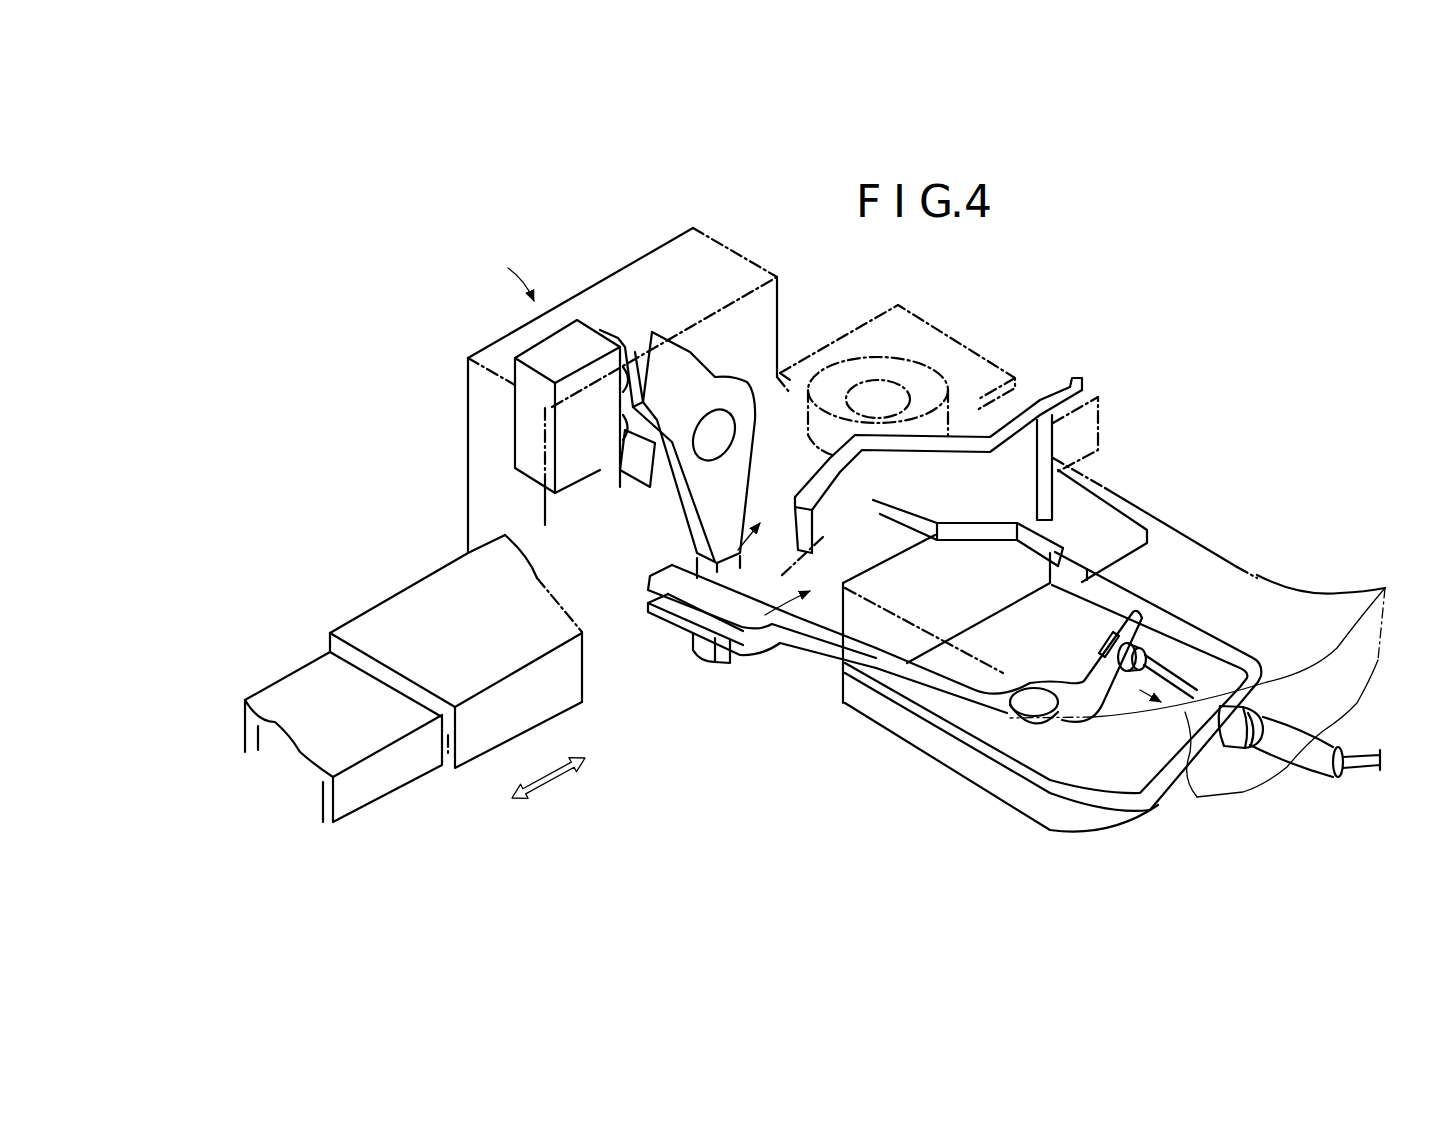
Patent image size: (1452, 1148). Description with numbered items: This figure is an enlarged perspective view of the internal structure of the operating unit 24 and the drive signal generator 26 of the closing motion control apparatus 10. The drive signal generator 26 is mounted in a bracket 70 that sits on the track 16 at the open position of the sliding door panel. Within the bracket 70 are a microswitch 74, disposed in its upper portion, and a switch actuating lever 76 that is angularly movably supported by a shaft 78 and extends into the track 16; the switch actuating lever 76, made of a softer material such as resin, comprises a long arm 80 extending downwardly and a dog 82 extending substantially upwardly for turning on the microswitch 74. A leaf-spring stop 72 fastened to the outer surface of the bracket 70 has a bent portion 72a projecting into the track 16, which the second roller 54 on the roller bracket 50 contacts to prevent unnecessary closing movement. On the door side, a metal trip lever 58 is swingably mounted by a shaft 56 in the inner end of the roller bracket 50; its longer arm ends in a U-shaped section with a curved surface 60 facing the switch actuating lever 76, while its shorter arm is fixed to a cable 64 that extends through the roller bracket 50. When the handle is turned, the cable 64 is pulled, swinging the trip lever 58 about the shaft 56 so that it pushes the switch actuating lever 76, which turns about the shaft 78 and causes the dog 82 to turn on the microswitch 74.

The closing motion control apparatus 10 is at (1268, 287).
The track 16 is at (421, 782).
The operating unit 24 is at (866, 732).
The drive signal generator 26 is at (635, 316).
The roller bracket 50 is at (1270, 571).
The second roller 54 is at (932, 388).
The shaft 56 is at (1042, 712).
The trip lever 58 is at (922, 665).
The curved surface 60 is at (745, 596).
The cable 64 is at (1368, 748).
The bracket 70 is at (462, 517).
The leaf-spring stop 72 is at (963, 487).
The bent portion 72a is at (880, 458).
The microswitch 74 is at (525, 430).
The switch actuating lever 76 is at (683, 481).
The shaft 78 is at (720, 427).
The long arm 80 is at (708, 652).
The dog 82 is at (704, 420).